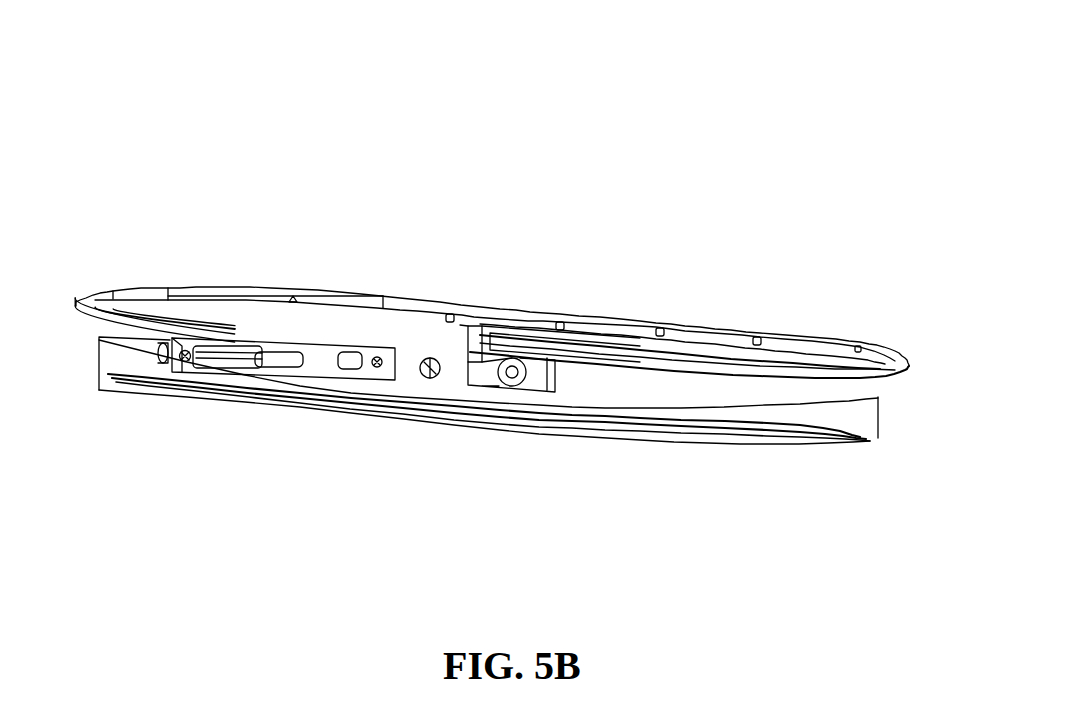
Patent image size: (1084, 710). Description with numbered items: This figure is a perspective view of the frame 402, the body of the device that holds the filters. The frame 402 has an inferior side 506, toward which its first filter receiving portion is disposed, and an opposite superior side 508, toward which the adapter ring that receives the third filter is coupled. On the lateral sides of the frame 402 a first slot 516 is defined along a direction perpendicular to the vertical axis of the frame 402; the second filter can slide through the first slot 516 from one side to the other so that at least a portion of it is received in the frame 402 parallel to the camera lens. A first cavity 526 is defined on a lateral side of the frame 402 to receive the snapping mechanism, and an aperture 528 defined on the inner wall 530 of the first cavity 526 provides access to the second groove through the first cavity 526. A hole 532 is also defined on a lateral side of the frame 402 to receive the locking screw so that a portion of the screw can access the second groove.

The frame 402 is at (205, 115).
The inferior side 506 is at (473, 452).
The superior side 508 is at (673, 289).
The first slot 516 is at (880, 393).
The first cavity 526 is at (305, 364).
The aperture 528 is at (228, 380).
The inner wall 530 is at (350, 372).
The hole 532 is at (430, 378).